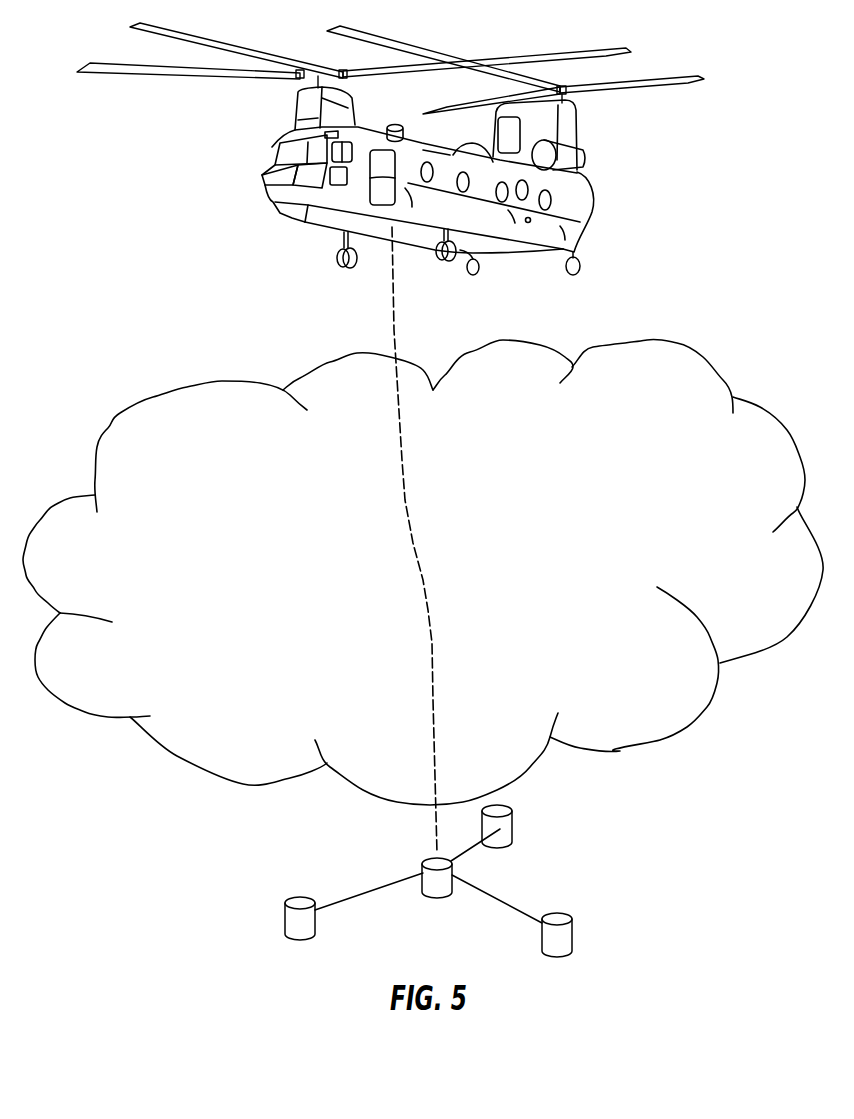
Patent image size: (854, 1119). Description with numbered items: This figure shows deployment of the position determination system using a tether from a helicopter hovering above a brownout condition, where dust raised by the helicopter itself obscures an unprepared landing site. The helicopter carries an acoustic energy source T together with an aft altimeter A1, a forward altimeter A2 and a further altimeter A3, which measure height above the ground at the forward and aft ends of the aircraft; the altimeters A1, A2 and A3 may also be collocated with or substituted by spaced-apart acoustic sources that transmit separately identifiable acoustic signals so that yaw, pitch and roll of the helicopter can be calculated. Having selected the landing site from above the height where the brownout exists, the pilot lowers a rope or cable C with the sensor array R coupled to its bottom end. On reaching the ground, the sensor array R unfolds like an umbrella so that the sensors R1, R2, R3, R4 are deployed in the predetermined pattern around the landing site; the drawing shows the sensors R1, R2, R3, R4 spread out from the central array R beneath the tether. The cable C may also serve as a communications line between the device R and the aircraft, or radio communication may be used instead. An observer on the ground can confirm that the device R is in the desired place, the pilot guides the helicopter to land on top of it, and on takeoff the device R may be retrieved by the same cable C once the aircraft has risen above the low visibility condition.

The aft altimeter A1 is at (327, 254).
The forward altimeter A2 is at (437, 261).
The altimeter A3 is at (520, 268).
The acoustic energy source T is at (414, 540).
The rope or cable C is at (403, 497).
The sensor array R is at (414, 881).
The sensor R1 is at (436, 895).
The sensor R2 is at (515, 826).
The sensor R3 is at (576, 935).
The sensor R4 is at (280, 918).